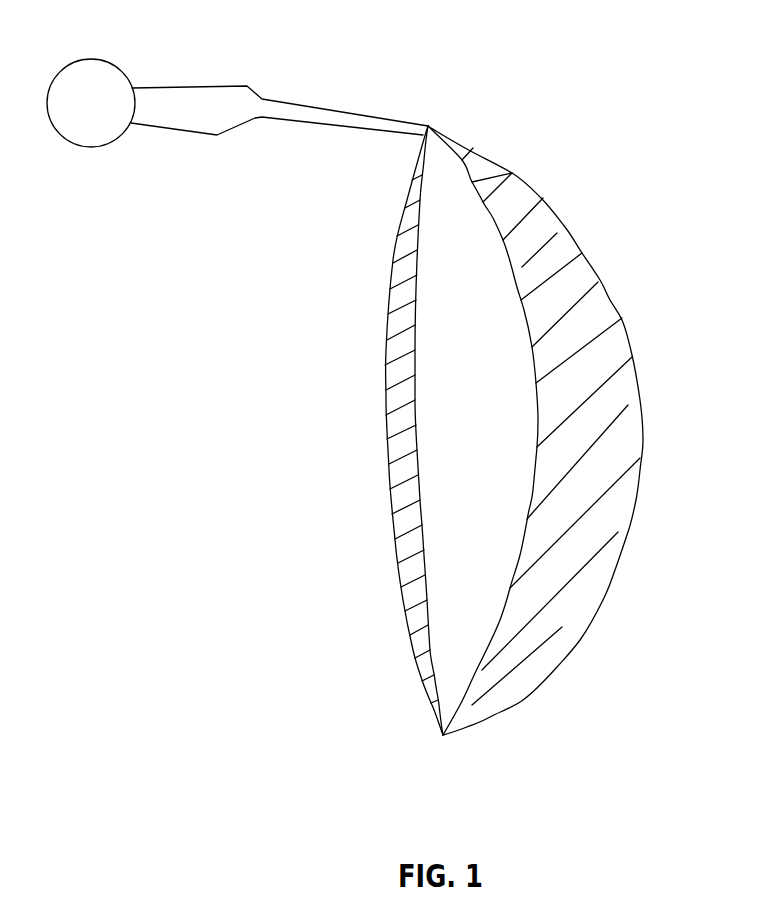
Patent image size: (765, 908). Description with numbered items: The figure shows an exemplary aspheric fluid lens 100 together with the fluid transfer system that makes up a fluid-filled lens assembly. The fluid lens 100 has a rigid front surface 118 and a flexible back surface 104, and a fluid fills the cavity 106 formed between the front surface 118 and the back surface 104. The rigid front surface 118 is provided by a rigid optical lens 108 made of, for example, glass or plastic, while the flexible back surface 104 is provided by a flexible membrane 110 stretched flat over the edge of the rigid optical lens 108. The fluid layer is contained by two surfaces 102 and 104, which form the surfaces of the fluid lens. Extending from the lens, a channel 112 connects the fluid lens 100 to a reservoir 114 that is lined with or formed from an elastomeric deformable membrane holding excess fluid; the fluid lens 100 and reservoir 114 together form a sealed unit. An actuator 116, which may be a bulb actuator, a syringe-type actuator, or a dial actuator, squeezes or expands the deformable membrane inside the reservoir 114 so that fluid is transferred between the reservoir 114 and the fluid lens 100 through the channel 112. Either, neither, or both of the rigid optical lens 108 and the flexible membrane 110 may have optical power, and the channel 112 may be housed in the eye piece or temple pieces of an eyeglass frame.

The aspheric fluid lens 100 is at (494, 406).
The surface containing the fluid 102 is at (493, 214).
The flexible back surface 104 is at (386, 373).
The cavity 106 is at (457, 465).
The rigid optical lens 108 is at (622, 457).
The flexible membrane 110 is at (413, 595).
The channel 112 is at (279, 86).
The reservoir 114 is at (178, 88).
The actuator 116 is at (85, 76).
The rigid front surface 118 is at (611, 302).